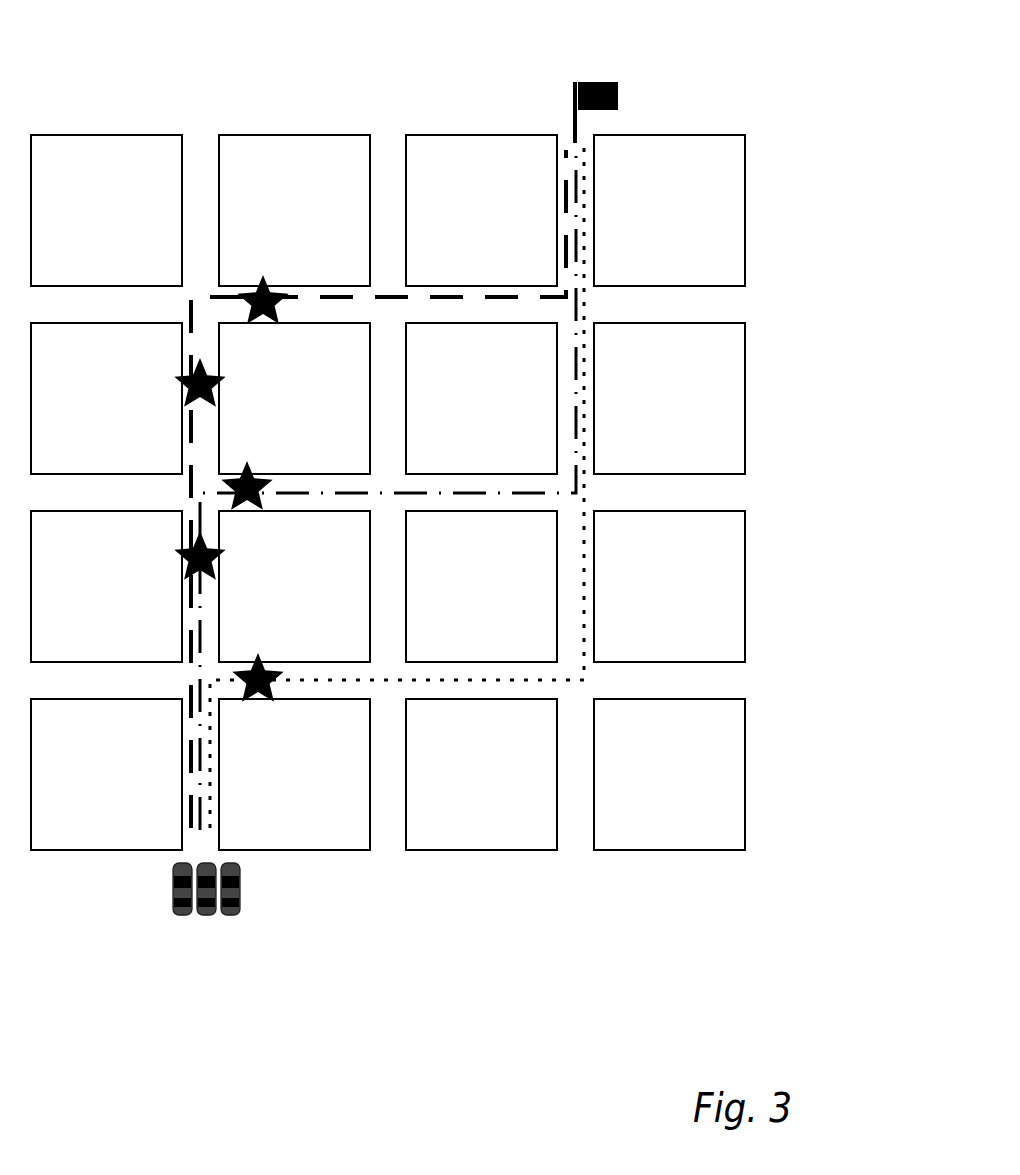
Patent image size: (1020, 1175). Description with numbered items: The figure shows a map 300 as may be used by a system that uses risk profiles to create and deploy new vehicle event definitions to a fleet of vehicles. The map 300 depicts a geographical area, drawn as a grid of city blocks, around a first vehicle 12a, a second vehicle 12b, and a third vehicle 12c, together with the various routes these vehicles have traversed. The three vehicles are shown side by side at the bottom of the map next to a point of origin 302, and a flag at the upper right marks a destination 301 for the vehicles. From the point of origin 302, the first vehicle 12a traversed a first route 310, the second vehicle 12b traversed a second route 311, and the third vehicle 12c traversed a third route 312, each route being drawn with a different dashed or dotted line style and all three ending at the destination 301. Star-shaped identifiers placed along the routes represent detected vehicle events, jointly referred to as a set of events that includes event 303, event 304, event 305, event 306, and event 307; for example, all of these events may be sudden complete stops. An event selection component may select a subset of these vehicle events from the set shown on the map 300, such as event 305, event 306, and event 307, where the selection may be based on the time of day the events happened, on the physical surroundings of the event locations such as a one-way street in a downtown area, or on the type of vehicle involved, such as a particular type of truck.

The map 300 is at (757, 46).
The destination 301 is at (573, 118).
The point of origin 302 is at (197, 840).
The event 303 is at (179, 552).
The event 304 is at (177, 378).
The event 305 is at (275, 325).
The event 306 is at (270, 500).
The event 307 is at (275, 690).
The first route 310 is at (415, 297).
The second route 311 is at (438, 493).
The third route 312 is at (453, 679).
The first vehicle 12a is at (183, 925).
The second vehicle 12b is at (207, 925).
The third vehicle 12c is at (231, 925).